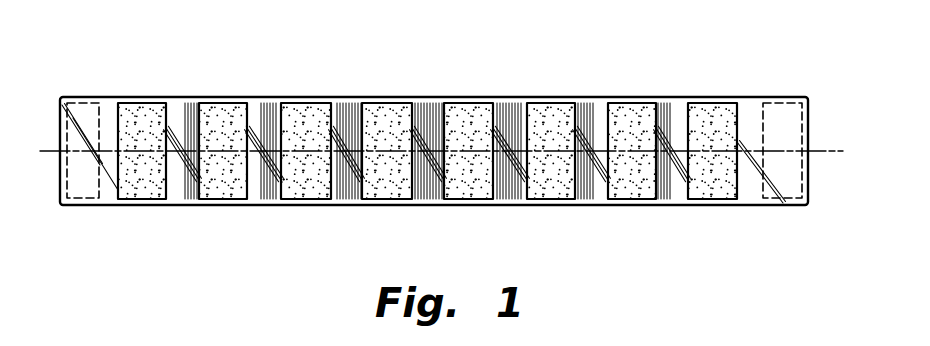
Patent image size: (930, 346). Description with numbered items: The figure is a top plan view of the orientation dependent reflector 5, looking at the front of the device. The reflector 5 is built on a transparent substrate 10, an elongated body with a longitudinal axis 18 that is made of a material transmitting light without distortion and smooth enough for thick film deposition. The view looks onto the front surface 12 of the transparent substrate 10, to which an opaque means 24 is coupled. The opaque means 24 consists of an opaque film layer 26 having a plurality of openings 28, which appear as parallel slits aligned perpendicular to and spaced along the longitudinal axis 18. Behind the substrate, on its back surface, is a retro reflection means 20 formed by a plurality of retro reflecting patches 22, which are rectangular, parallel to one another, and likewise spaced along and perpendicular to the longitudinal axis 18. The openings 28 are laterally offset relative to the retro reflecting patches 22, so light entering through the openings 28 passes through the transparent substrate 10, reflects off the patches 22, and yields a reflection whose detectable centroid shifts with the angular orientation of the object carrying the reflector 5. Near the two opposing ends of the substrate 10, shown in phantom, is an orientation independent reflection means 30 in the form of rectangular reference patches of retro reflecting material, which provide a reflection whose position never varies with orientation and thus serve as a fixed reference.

The orientation dependent reflector 5 is at (566, 58).
The transparent substrate 10 is at (750, 97).
The front surface 12 is at (744, 195).
The longitudinal axis 18 is at (843, 151).
The retro reflection means 20 is at (427, 187).
The retro reflecting patches 22 is at (440, 190).
The opaque means 24 is at (427, 117).
The opaque film layer 26 is at (457, 108).
The openings 28 is at (600, 195).
The orientation independent reflection means 30 is at (78, 183).